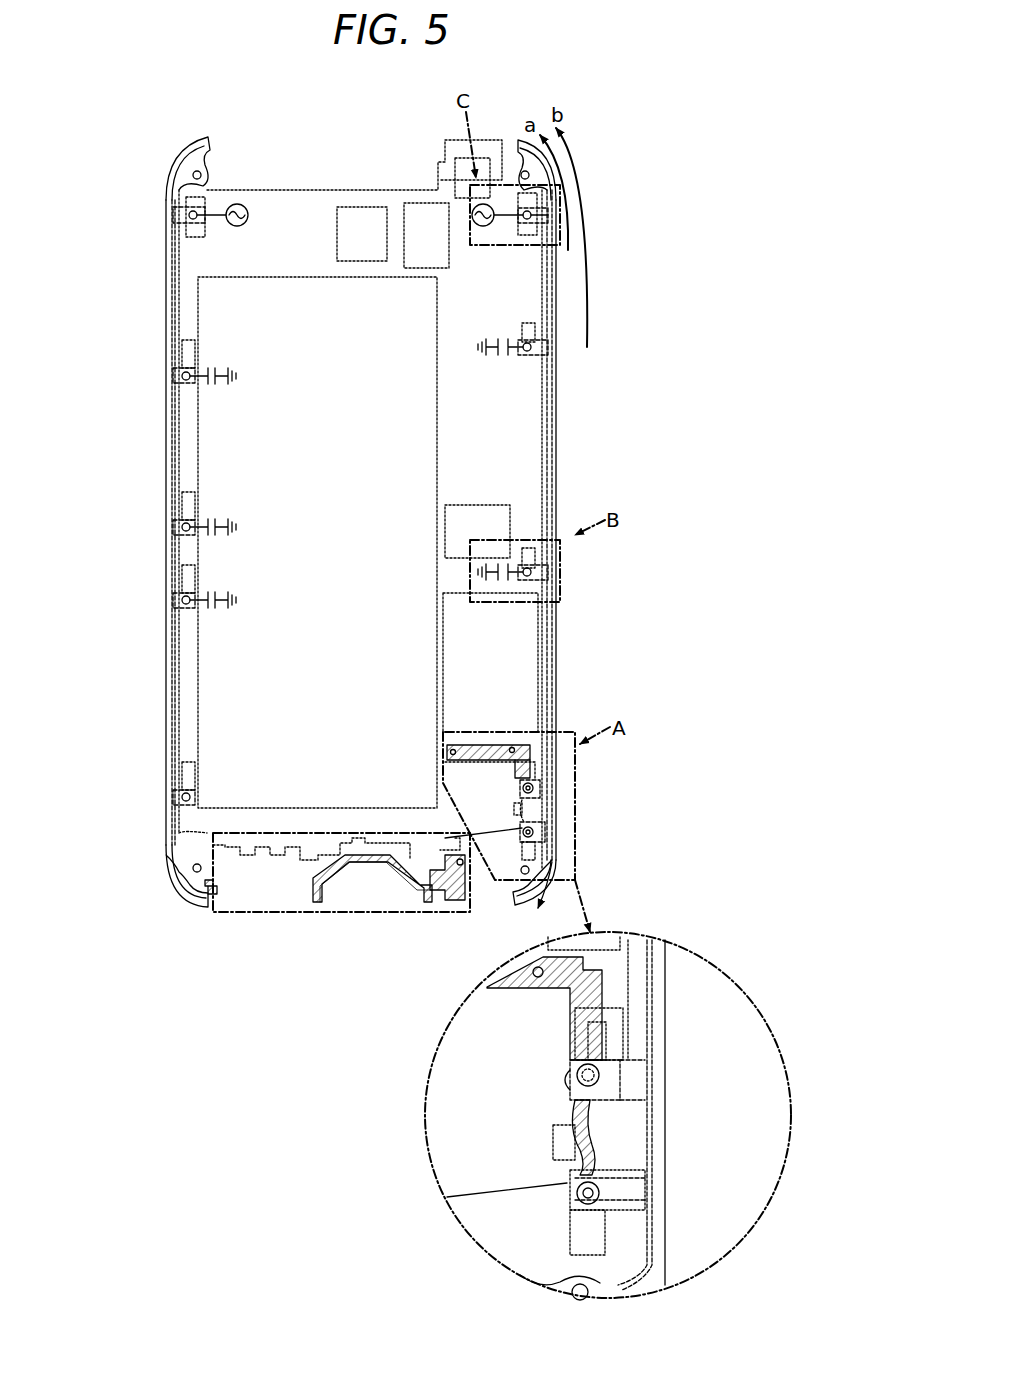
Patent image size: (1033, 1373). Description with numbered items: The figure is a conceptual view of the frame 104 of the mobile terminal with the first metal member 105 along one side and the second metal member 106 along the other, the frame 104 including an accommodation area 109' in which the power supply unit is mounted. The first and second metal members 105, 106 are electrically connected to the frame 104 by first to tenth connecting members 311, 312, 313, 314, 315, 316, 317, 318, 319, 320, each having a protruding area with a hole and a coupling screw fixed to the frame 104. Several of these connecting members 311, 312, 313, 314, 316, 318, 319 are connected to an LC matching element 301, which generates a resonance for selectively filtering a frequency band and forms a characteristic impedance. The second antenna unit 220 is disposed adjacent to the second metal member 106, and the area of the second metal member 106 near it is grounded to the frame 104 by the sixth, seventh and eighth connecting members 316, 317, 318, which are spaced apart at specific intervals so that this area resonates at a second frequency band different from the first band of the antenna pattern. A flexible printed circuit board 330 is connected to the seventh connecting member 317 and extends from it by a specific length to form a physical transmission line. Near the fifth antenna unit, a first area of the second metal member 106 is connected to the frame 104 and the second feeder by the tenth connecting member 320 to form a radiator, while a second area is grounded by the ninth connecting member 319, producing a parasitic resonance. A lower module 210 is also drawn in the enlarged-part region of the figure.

The frame 104 is at (505, 449).
The first metal member 105 is at (170, 697).
The second metal member 106 is at (553, 648).
The accommodation area 109' is at (421, 542).
The bottom module 210 is at (266, 915).
The second antenna unit 220 is at (594, 1140).
The LC matching element 301 is at (189, 353).
The first connecting member 311 is at (182, 797).
The second connecting member 312 is at (182, 600).
The third connecting member 313 is at (182, 527).
The fourth connecting member 314 is at (182, 376).
The fifth connecting member 315 is at (189, 216).
The sixth connecting member 316 is at (534, 832).
The seventh connecting member 317 is at (534, 788).
The eighth connecting member 318 is at (531, 572).
The ninth connecting member 319 is at (531, 347).
The tenth connecting member 320 is at (534, 216).
The flexible printed circuit board 330 is at (590, 1000).